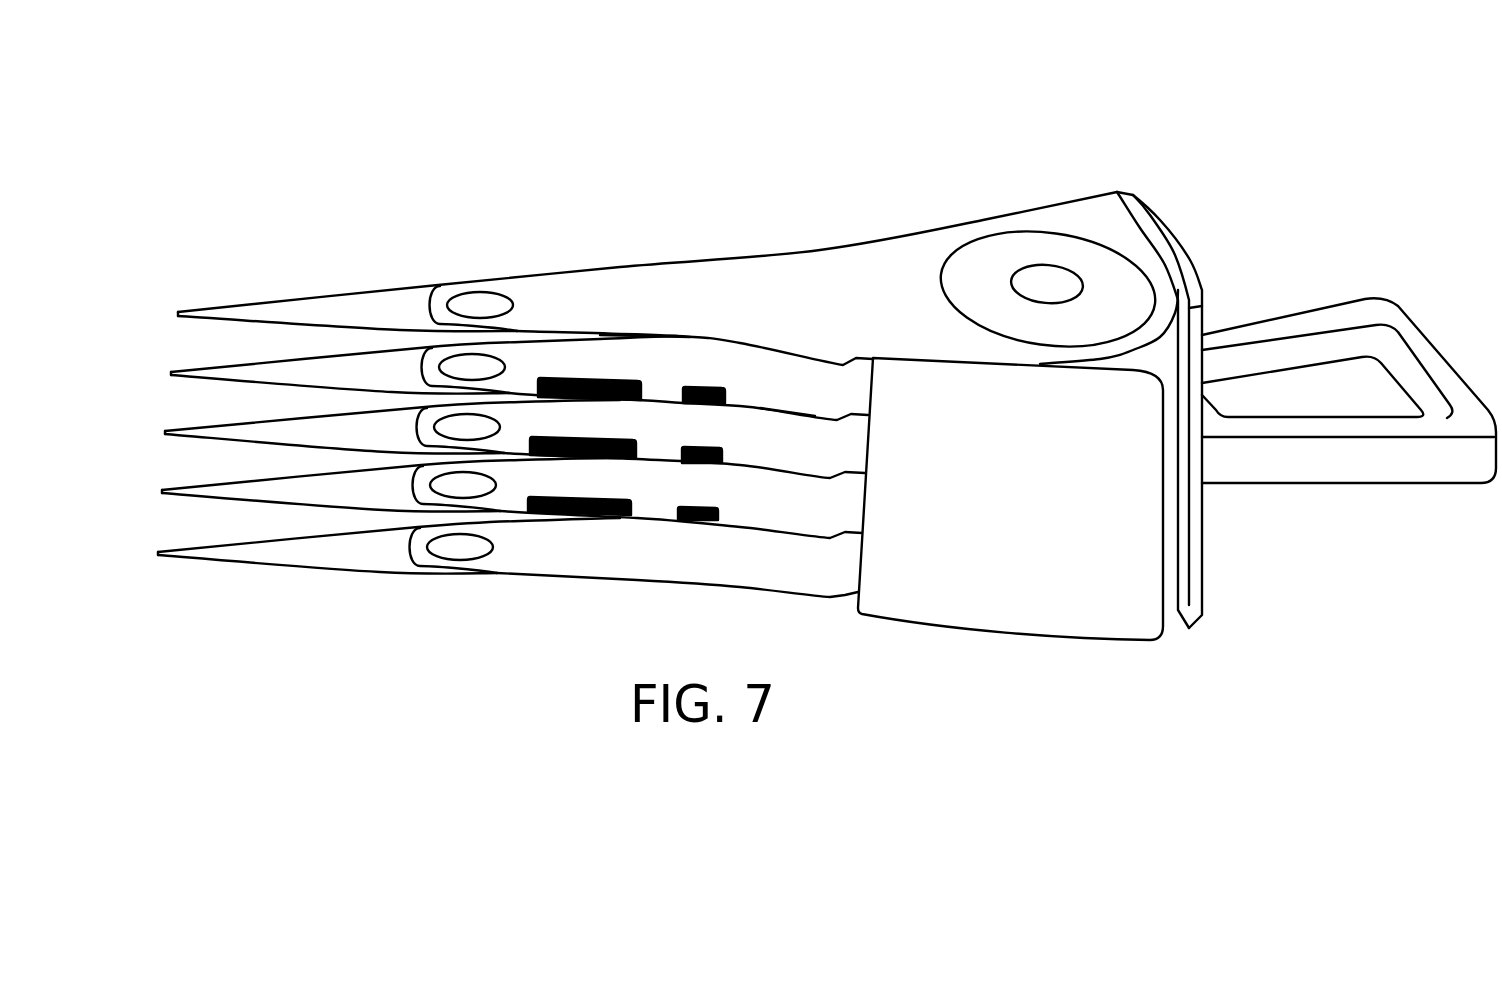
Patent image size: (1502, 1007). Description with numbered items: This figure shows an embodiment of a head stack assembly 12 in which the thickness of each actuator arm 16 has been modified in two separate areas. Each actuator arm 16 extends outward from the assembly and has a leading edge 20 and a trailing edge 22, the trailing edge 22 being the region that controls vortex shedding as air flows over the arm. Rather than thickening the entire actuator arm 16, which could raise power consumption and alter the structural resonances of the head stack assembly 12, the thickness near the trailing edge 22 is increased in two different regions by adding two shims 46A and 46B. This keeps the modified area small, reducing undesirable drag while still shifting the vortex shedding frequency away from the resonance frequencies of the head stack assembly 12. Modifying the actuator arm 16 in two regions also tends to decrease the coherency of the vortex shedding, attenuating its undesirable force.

The head stack assembly 12 is at (746, 160).
The actuator arm 16 is at (849, 362).
The leading edge 20 is at (745, 266).
The trailing edge 22 is at (674, 328).
The shim 46A is at (591, 374).
The shim 46B is at (703, 380).